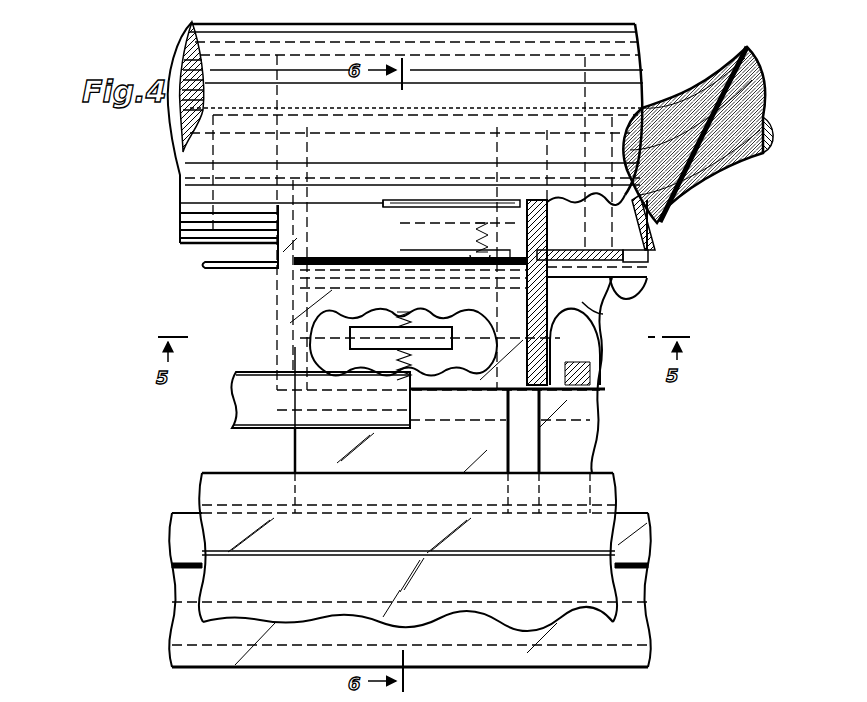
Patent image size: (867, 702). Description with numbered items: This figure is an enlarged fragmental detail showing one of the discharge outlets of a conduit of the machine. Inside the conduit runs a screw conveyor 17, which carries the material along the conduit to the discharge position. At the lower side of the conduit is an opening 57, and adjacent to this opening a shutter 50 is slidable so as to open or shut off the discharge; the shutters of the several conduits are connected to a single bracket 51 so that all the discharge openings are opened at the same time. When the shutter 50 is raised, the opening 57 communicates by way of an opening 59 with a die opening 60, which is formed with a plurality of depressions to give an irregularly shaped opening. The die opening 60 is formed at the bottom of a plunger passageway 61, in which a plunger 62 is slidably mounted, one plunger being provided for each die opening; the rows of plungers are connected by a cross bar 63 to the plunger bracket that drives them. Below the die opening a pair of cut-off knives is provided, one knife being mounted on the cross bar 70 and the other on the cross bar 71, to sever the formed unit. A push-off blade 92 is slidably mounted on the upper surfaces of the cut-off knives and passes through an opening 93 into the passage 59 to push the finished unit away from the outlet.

The screw conveyor 17 is at (660, 110).
The bracket 51 is at (383, 203).
The opening 57 is at (587, 289).
The opening 93 is at (630, 270).
The cross bar 70 is at (205, 266).
The shutter 50 is at (298, 262).
The die opening 60 is at (314, 320).
The plunger 62 is at (350, 336).
The opening 59 is at (604, 314).
The cross bar 63 is at (246, 405).
The plunger passageway 61 is at (452, 362).
The push-off blade 92 is at (298, 444).
The cross bar 71 is at (178, 533).